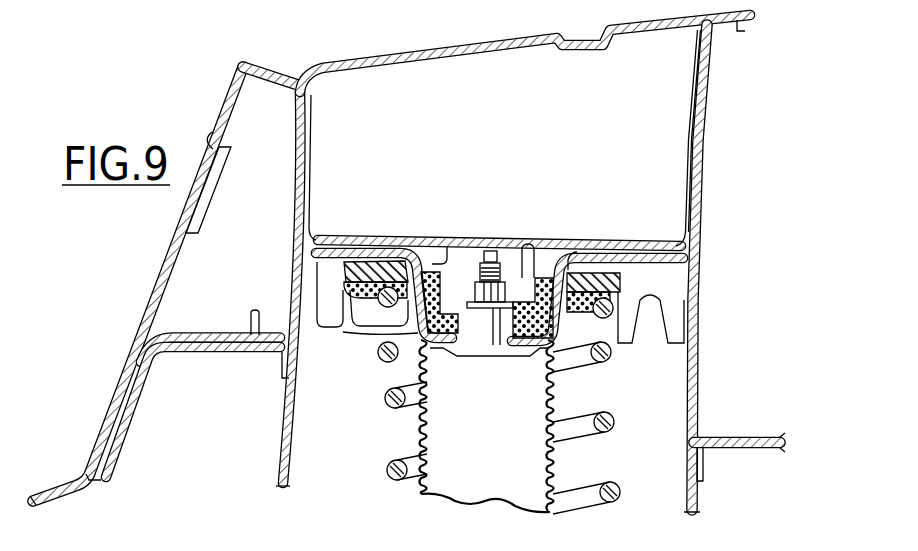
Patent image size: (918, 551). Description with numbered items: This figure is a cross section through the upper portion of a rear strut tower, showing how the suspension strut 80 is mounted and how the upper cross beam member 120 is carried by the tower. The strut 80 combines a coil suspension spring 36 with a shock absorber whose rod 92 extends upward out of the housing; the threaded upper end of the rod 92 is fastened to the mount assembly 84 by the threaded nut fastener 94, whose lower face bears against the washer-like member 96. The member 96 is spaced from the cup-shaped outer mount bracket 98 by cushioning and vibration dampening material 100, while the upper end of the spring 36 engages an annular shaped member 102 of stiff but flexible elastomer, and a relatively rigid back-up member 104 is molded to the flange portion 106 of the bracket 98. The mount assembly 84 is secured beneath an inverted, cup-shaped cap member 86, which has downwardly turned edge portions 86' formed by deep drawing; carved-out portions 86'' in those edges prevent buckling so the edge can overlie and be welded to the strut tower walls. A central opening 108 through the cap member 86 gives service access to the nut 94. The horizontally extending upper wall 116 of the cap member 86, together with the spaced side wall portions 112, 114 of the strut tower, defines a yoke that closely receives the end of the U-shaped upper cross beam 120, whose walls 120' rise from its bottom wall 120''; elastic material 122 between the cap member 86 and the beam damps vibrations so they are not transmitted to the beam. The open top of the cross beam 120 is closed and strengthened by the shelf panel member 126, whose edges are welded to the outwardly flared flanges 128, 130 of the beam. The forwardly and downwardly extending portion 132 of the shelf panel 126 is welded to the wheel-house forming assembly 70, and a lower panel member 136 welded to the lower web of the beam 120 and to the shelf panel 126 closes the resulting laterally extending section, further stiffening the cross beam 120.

The coil suspension spring 36 is at (397, 408).
The wheel-house forming assembly 70 is at (136, 400).
The suspension strut 80 is at (381, 476).
The mount assembly 84 is at (335, 275).
The cap member 86 is at (651, 339).
The downwardly turned edge portion 86' is at (488, 298).
The carved-out portion 86'' is at (472, 421).
The rod 92 is at (484, 344).
The threaded nut fastener 94 is at (473, 262).
The washer-like member 96 is at (536, 246).
The outer mount bracket 98 is at (434, 334).
The cushioning and vibration dampening material 100 is at (417, 345).
The annular shaped member 102 is at (558, 358).
The back-up member 104 is at (616, 281).
The flange portion 106 is at (374, 256).
The central opening 108 is at (506, 265).
The side wall portion 112 is at (705, 150).
The side wall portion 114 is at (303, 193).
The upper wall 116 is at (599, 258).
The upper cross beam member 120 is at (329, 289).
The upper cross beam wall 120' is at (505, 138).
The bottom wall 120'' is at (501, 225).
The elastic material 122 is at (406, 240).
The shelf panel member 126 is at (396, 52).
The outwardly flared flange 128 is at (267, 90).
The outwardly flared flange 130 is at (738, 31).
The forwardly and downwardly extending portion 132 is at (170, 253).
The lower panel member 136 is at (186, 332).